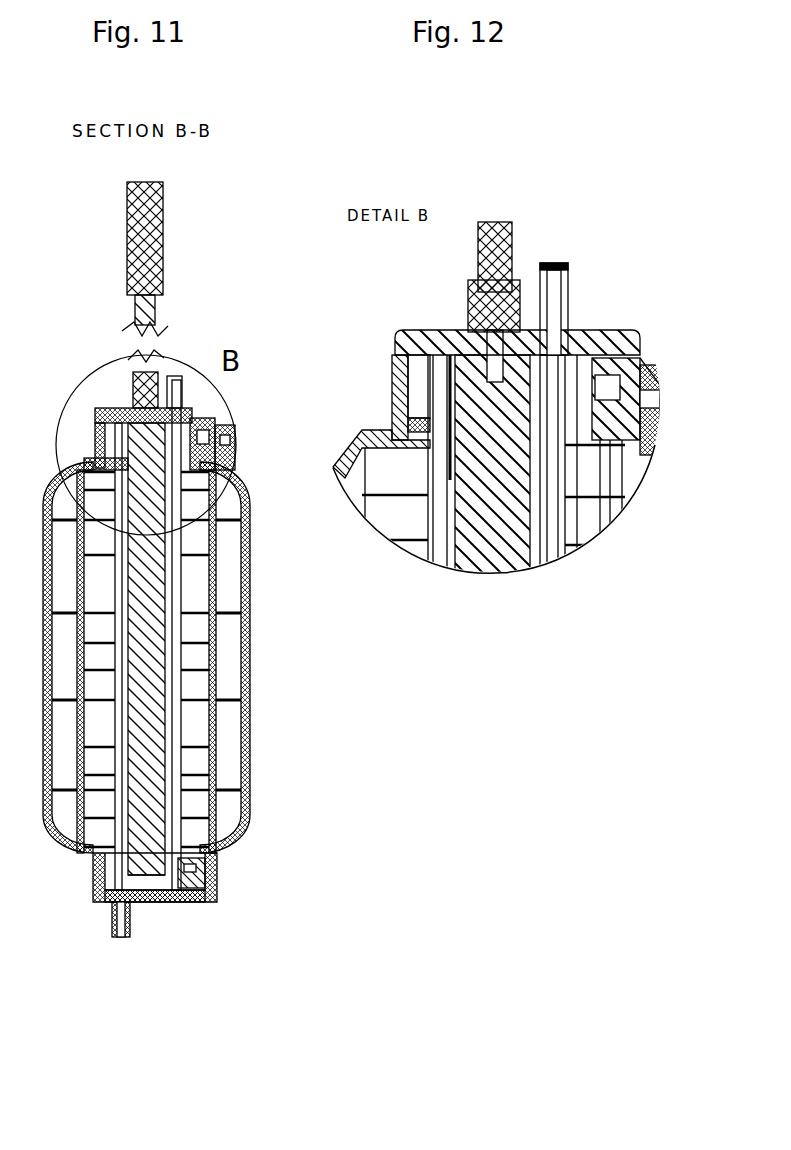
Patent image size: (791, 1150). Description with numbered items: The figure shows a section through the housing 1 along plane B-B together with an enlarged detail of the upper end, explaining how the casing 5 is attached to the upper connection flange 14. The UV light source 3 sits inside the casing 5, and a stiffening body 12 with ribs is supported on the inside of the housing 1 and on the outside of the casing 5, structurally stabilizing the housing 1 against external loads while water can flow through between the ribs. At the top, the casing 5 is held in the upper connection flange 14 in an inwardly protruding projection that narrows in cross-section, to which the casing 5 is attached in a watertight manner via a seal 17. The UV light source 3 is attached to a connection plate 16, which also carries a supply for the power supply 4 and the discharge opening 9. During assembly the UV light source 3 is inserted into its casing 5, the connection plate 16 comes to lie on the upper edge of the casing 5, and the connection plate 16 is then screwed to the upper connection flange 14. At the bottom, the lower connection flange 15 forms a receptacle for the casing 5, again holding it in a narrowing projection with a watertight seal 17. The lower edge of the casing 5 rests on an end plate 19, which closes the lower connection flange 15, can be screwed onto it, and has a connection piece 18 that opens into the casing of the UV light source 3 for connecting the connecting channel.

In FIG. 11, the housing 1 is at (232, 610).
In FIG. 12, the housing 1 is at (350, 450).
In FIG. 11, the UV light source 3 is at (143, 605).
In FIG. 12, the UV light source 3 is at (497, 538).
In FIG. 11, the power supply 4 is at (165, 231).
In FIG. 12, the power supply 4 is at (490, 226).
In FIG. 11, the casing 5 is at (181, 725).
In FIG. 12, the casing 5 is at (565, 512).
In FIG. 12, the discharge opening 9 is at (557, 264).
In FIG. 11, the stiffening body 12 is at (205, 655).
In FIG. 12, the upper connection flange 14 is at (390, 380).
In FIG. 11, the lower connection flange 15 is at (92, 878).
In FIG. 12, the connection plate 16 is at (450, 332).
In FIG. 12, the seal 17 is at (405, 435).
In FIG. 11, the connection piece 18 is at (130, 928).
In FIG. 11, the end plate 19 is at (163, 905).